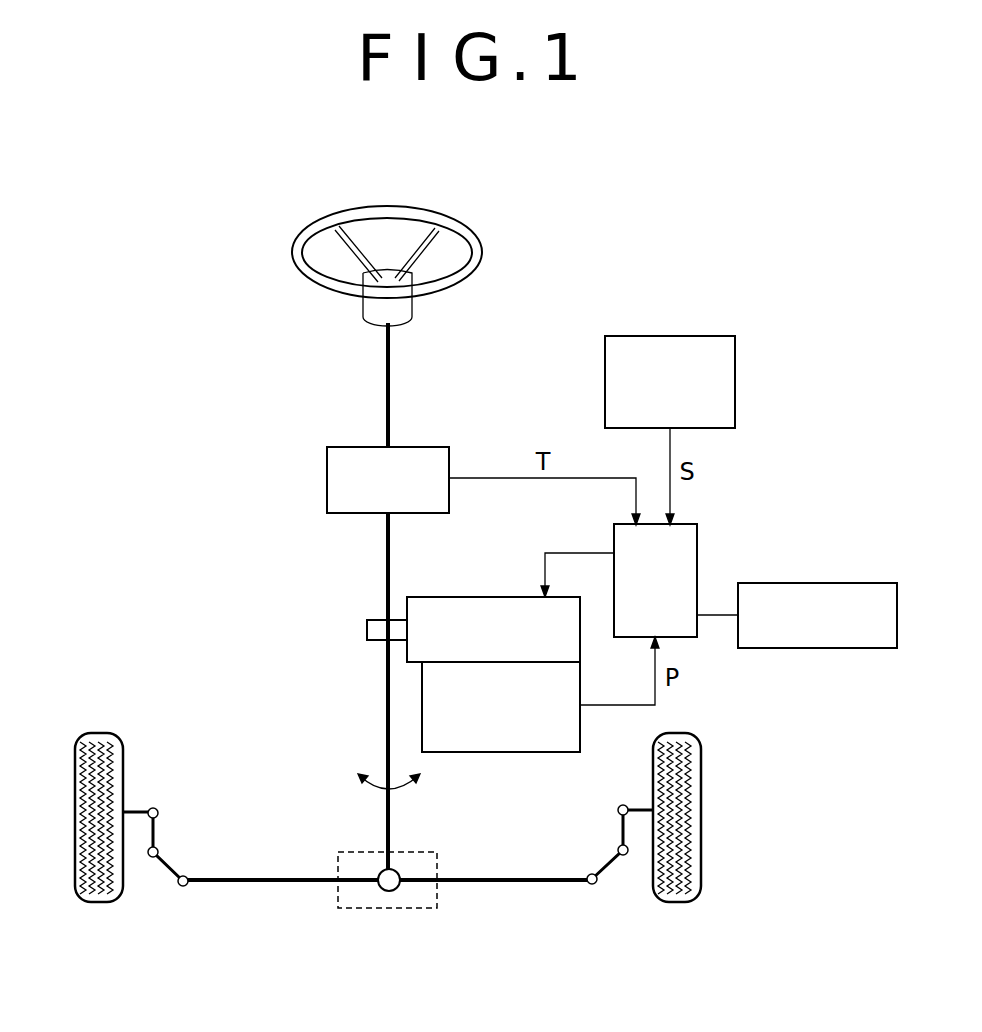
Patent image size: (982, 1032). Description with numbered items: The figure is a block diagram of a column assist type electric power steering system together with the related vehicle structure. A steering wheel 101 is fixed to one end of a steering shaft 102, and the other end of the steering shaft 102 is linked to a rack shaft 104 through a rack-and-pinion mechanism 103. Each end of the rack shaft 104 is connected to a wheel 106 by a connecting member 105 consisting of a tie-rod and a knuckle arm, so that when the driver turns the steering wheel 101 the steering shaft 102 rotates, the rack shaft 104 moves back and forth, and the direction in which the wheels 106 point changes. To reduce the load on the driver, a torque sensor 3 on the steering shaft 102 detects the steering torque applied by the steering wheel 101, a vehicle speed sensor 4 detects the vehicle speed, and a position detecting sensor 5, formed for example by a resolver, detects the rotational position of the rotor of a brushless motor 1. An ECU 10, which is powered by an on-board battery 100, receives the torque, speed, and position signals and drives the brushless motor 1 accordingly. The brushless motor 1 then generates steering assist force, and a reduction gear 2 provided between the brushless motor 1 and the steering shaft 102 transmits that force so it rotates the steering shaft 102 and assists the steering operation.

The brushless motor 1 is at (480, 597).
The reduction gear 2 is at (375, 620).
The torque sensor 3 is at (327, 478).
The vehicle speed sensor 4 is at (672, 335).
The position detecting sensor 5 is at (497, 752).
The ECU 10 is at (697, 550).
The on-board battery 100 is at (817, 648).
The steering wheel 101 is at (483, 250).
The steering shaft 102 is at (386, 388).
The rack-and-pinion mechanism 103 is at (388, 908).
The rack shaft 104 is at (510, 882).
The connecting member 105 is at (182, 846).
The wheel 106 is at (100, 902).